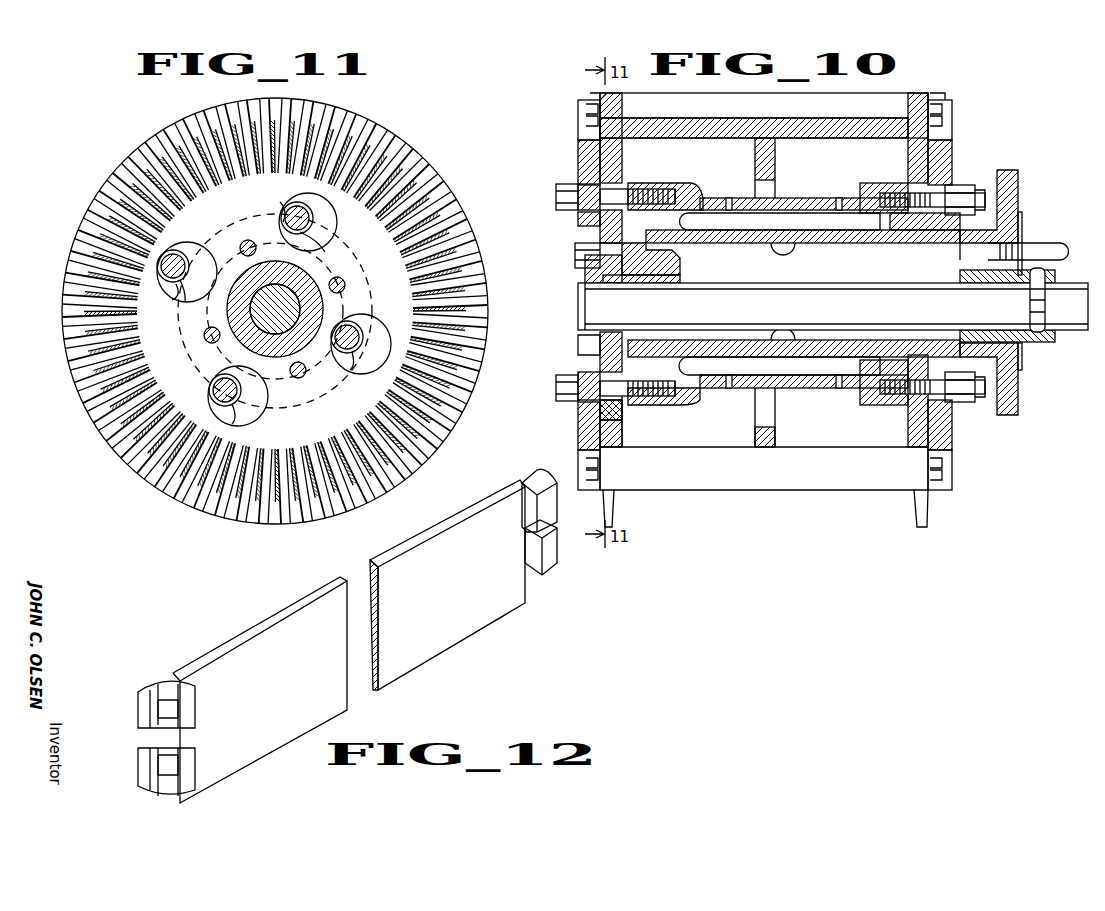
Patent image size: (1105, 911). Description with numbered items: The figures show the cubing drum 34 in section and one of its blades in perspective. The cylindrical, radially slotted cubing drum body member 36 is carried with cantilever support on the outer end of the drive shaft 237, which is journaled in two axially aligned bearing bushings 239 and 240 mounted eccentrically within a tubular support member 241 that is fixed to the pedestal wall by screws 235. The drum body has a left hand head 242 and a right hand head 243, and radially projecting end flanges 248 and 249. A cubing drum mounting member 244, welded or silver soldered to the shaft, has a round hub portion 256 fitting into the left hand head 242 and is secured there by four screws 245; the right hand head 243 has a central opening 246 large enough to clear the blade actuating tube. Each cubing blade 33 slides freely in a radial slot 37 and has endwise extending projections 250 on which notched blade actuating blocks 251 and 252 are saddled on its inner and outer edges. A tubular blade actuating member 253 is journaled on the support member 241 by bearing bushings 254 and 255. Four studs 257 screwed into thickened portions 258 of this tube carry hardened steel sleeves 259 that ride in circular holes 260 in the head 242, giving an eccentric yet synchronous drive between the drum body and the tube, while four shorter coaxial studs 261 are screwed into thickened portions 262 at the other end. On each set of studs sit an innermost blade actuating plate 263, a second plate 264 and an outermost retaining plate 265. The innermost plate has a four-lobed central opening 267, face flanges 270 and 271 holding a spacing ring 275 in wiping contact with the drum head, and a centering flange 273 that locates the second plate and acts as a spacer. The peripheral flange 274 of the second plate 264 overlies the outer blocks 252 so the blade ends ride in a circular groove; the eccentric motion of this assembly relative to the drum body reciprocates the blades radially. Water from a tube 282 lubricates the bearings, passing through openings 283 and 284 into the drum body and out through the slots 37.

In FIG. 11, the cubing blade 33 is at (90, 245).
In FIG. 10, the cubing blade 33 is at (788, 110).
In FIG. 12, the cubing blade 33 is at (390, 660).
In FIG. 11, the cubing drum 34 is at (421, 155).
In FIG. 10, the cubing drum 34 is at (966, 144).
In FIG. 11, the cubing drum body member 36 is at (336, 420).
In FIG. 10, the cubing drum body member 36 is at (612, 163).
In FIG. 11, the slots 37 is at (318, 512).
In FIG. 10, the slots 37 is at (612, 440).
In FIG. 11, the screws 235 is at (250, 404).
In FIG. 11, the drive shaft 237 is at (318, 300).
In FIG. 10, the drive shaft 237 is at (595, 306).
In FIG. 10, the bearing bushing 239 is at (680, 278).
In FIG. 10, the bearing bushing 240 is at (962, 275).
In FIG. 10, the tubular support member 241 is at (870, 243).
In FIG. 11, the left hand head 242 is at (340, 112).
In FIG. 10, the left hand head 242 is at (612, 108).
In FIG. 10, the right hand head 243 is at (918, 110).
In FIG. 11, the cubing drum mounting member 244 is at (200, 318).
In FIG. 10, the cubing drum mounting member 244 is at (600, 280).
In FIG. 11, the screws 245 is at (250, 240).
In FIG. 10, the screws 245 is at (575, 258).
In FIG. 10, the central opening 246 is at (902, 183).
In FIG. 10, the end flange 248 is at (607, 96).
In FIG. 10, the end flange 249 is at (922, 96).
In FIG. 12, the endwise extending projections 250 is at (150, 746).
In FIG. 10, the blade actuating block 251 is at (586, 121).
In FIG. 12, the blade actuating block 251 is at (182, 716).
In FIG. 10, the blade actuating block 252 is at (586, 109).
In FIG. 12, the blade actuating block 252 is at (184, 756).
In FIG. 10, the tubular blade actuating member 253 is at (790, 190).
In FIG. 10, the bearing bushing 254 is at (700, 222).
In FIG. 10, the bearing bushing 255 is at (890, 221).
In FIG. 11, the round hub portion 256 is at (340, 272).
In FIG. 10, the round hub portion 256 is at (660, 258).
In FIG. 11, the studs 257 is at (180, 252).
In FIG. 10, the studs 257 is at (556, 197).
In FIG. 11, the thickened portions 258 is at (296, 192).
In FIG. 10, the thickened portions 258 is at (680, 183).
In FIG. 11, the hardened steel sleeve 259 is at (208, 244).
In FIG. 10, the hardened steel sleeve 259 is at (600, 220).
In FIG. 11, the circular holes 260 is at (312, 216).
In FIG. 10, the circular holes 260 is at (600, 238).
In FIG. 10, the studs 261 is at (985, 200).
In FIG. 10, the thickened portions 262 is at (880, 178).
In FIG. 10, the innermost blade actuating plate 263 is at (598, 156).
In FIG. 10, the second blade actuating plate 264 is at (598, 140).
In FIG. 10, the outermost plate 265 is at (598, 188).
In FIG. 10, the central opening 267 is at (585, 348).
In FIG. 10, the face flange 270 is at (626, 150).
In FIG. 10, the face flange 271 is at (612, 178).
In FIG. 10, the centering flange 273 is at (580, 398).
In FIG. 10, the peripheral flange 274 is at (595, 96).
In FIG. 10, the spacing ring 275 is at (598, 172).
In FIG. 10, the tube 282 is at (1045, 248).
In FIG. 10, the openings 283 is at (790, 250).
In FIG. 10, the openings 284 is at (735, 190).